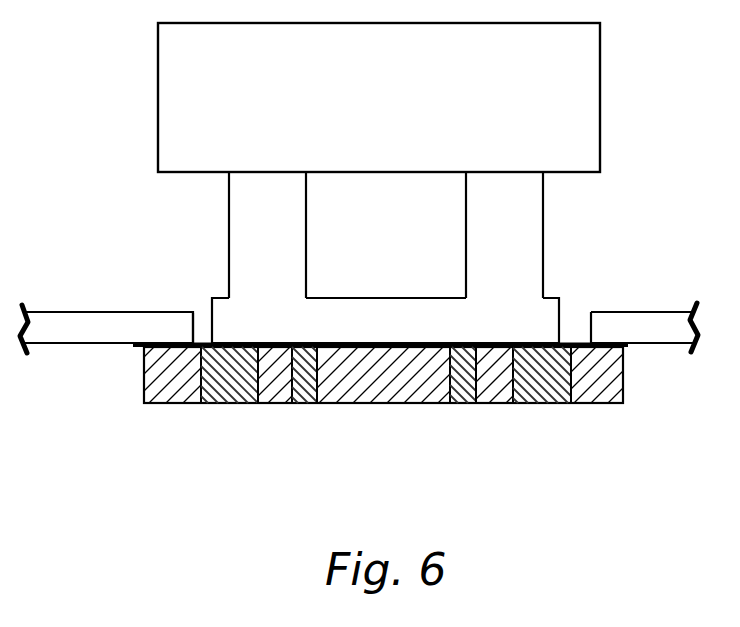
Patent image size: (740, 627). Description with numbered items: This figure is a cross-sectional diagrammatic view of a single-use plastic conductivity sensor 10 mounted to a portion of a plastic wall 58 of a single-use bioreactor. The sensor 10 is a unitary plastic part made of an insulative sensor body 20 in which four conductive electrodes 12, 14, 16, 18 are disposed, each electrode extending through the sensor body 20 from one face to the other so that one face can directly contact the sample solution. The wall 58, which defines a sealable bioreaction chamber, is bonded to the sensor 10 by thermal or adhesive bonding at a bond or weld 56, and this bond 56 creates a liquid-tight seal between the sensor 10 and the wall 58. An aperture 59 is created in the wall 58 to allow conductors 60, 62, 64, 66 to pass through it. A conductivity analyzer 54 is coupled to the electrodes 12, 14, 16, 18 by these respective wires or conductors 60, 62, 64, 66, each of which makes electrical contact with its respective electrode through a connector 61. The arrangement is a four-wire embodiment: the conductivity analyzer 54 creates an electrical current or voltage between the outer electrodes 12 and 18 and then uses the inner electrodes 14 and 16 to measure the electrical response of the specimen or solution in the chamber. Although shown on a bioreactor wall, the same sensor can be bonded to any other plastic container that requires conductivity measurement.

The plastic conductivity sensor 10 is at (387, 405).
The conductive electrode 12 is at (227, 404).
The conductive electrode 14 is at (303, 404).
The conductive electrode 16 is at (465, 404).
The conductive electrode 18 is at (539, 404).
The insulative sensor body 20 is at (144, 378).
The conductivity analyzer 54 is at (395, 108).
The bond or weld 56 is at (627, 348).
The plastic wall 58 is at (652, 328).
The aperture 59 is at (196, 330).
The conductor 60 is at (228, 259).
The connector 61 is at (400, 336).
The conductor 62 is at (307, 263).
The conductor 64 is at (465, 243).
The conductor 66 is at (544, 243).